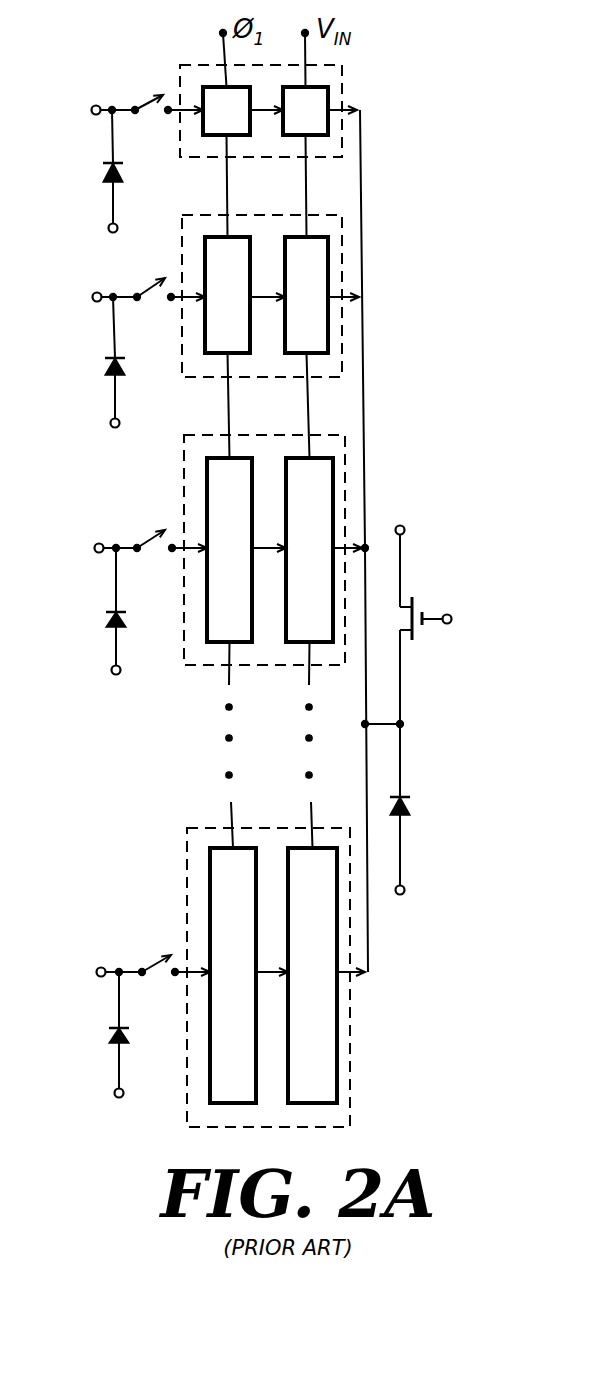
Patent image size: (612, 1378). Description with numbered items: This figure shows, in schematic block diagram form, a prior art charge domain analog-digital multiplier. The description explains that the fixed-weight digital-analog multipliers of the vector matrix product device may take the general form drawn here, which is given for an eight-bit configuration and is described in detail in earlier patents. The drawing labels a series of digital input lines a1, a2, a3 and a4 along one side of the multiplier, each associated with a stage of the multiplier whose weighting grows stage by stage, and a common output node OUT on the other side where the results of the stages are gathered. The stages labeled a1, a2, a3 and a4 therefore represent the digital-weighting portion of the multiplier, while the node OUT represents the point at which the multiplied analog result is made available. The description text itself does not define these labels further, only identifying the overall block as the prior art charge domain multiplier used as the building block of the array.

The address line a1 switch and diode a1 is at (204, 149).
The address line a2 switch and diode a2 is at (207, 321).
The address line a3 switch and diode a3 is at (208, 555).
The address line a4 switch and diode a4 is at (210, 977).
The output stage with reset transistor OUT is at (400, 699).